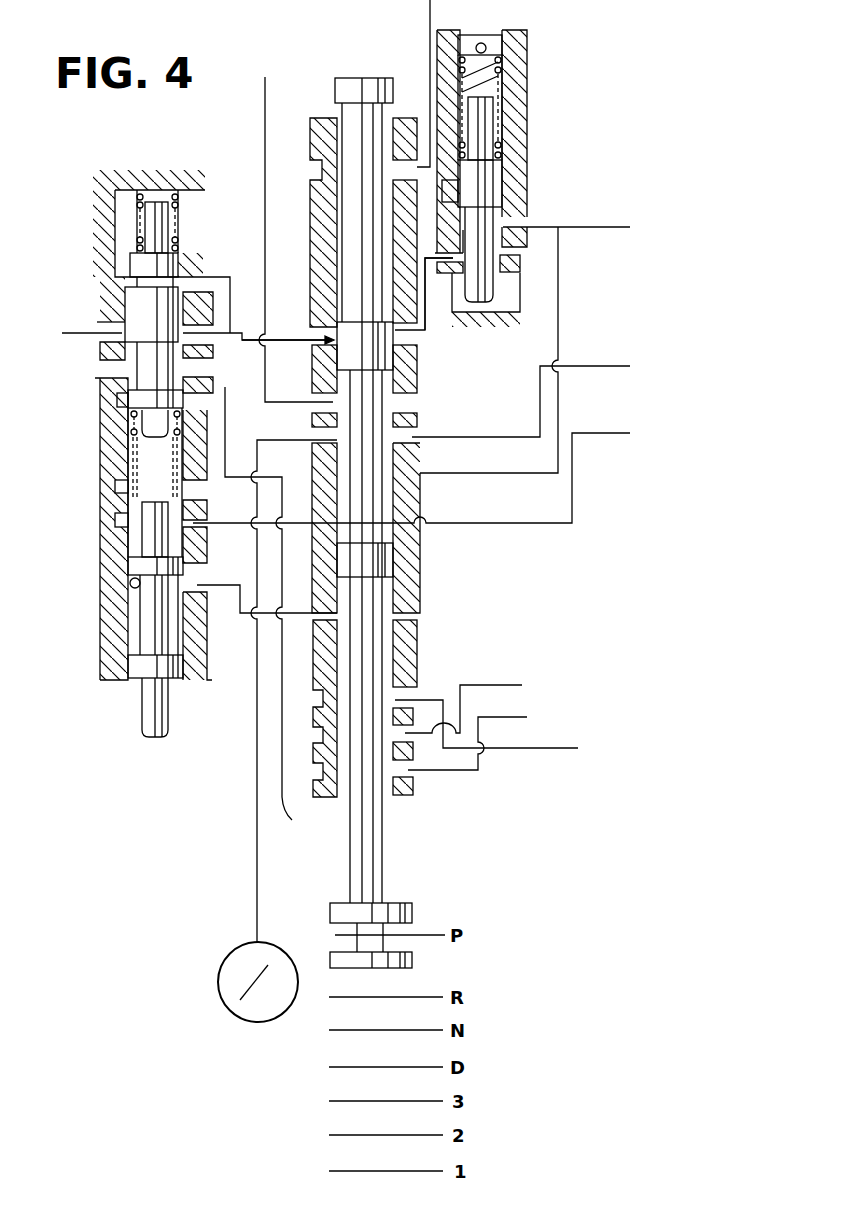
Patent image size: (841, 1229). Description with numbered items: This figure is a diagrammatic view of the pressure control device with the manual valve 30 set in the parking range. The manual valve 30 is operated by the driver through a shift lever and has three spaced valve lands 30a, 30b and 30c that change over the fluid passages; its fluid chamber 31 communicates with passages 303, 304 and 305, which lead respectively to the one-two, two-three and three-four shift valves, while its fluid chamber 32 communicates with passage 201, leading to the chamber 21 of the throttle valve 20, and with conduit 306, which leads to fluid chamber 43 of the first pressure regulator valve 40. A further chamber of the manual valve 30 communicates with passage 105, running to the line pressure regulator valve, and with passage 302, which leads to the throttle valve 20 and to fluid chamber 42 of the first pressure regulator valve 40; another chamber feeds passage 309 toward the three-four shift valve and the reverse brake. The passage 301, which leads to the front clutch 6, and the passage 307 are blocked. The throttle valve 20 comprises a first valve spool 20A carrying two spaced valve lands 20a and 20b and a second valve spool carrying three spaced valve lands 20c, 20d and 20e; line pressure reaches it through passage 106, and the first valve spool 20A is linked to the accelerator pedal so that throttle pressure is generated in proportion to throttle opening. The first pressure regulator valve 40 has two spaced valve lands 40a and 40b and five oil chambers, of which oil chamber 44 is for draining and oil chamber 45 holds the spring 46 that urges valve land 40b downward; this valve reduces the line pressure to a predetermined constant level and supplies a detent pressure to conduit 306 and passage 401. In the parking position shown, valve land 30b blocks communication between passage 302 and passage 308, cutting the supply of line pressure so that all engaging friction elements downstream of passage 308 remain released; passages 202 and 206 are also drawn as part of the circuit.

The throttle valve 20 is at (178, 170).
The first valve spool 20A is at (146, 608).
The valve land 20a is at (140, 672).
The valve land 20b is at (128, 567).
The valve land 20c is at (130, 404).
The valve land 20d is at (113, 290).
The valve land 20e is at (180, 262).
The chamber 21 is at (178, 638).
The manual valve 30 is at (352, 72).
The valve land 30a is at (341, 578).
The valve land 30b is at (395, 362).
The valve land 30c is at (336, 96).
The fluid chamber 31 is at (395, 695).
The fluid chamber 32 is at (390, 493).
The first pressure regulator valve 40 is at (542, 107).
The valve land 40a is at (524, 282).
The valve land 40b is at (500, 157).
The fluid chamber 42 is at (437, 253).
The fluid chamber 43 is at (505, 224).
The oil chamber 44 is at (505, 192).
The oil chamber 45 is at (473, 57).
The spring 46 is at (503, 90).
The front clutch 6 is at (228, 955).
The passage 105 is at (266, 183).
The passage 106 is at (75, 332).
The passage 201 is at (290, 618).
The kick-down line 202 is at (577, 433).
The hydraulic line 206 is at (282, 797).
The passage 301 is at (257, 748).
The passage 302 is at (283, 338).
The passage 303 is at (508, 717).
The passage 304 is at (500, 683).
The passage 305 is at (545, 748).
The conduit 306 is at (558, 318).
The passage 307 is at (575, 367).
The passage 308 is at (428, 328).
The passage 309 is at (428, 42).
The passage 401 is at (602, 227).